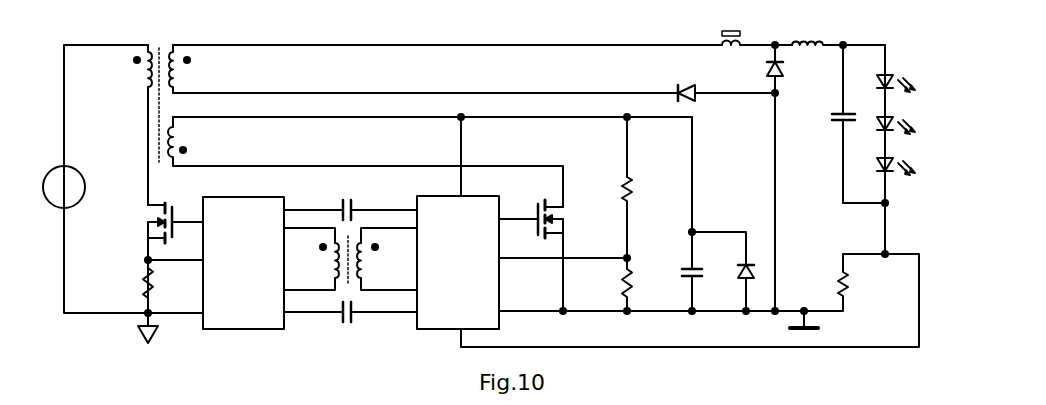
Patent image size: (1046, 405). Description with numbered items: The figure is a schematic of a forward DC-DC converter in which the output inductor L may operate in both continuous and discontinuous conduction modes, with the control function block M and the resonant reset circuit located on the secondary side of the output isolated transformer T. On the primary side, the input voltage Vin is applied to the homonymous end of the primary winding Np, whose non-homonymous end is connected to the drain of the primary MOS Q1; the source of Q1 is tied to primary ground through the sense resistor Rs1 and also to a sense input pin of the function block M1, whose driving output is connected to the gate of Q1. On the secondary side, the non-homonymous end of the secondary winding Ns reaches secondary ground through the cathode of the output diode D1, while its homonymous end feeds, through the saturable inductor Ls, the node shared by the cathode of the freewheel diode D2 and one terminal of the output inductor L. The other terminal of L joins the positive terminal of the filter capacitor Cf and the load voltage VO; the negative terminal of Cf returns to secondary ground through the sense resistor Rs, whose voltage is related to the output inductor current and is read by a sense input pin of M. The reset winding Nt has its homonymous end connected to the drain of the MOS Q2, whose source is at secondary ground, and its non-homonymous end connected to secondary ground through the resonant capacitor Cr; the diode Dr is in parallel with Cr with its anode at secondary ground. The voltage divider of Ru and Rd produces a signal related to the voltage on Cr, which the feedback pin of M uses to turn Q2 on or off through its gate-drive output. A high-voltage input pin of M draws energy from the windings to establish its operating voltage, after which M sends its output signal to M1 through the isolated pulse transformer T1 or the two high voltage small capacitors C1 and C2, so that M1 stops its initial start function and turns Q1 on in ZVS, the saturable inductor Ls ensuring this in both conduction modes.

The output isolated transformer T is at (420, 117).
The primary winding Np is at (135, 125).
The secondary winding Ns is at (445, 69).
The reset winding Nt is at (430, 162).
The input voltage Vin is at (75, 177).
The primary MOS Q1 is at (160, 258).
The sense resistor Rs1 is at (155, 299).
The function block M1 is at (244, 263).
The high voltage small capacitor C1 is at (350, 201).
The high voltage small capacitor C2 is at (350, 321).
The isolated pulse transformer T1 is at (350, 259).
The function block M is at (668, 230).
The MOS Q2 is at (543, 257).
The voltage divider resistor Ru is at (615, 185).
The voltage divider resistor Rd is at (615, 284).
The resonant capacitor Cr is at (684, 216).
The diode Dr is at (723, 273).
The output diode D1 is at (725, 84).
The freewheel diode D2 is at (786, 178).
The saturable inductor Ls is at (743, 35).
The output inductor L is at (838, 35).
The filter capacitor Cf is at (854, 126).
The load voltage VO is at (916, 151).
The sense resistor Rs is at (819, 291).